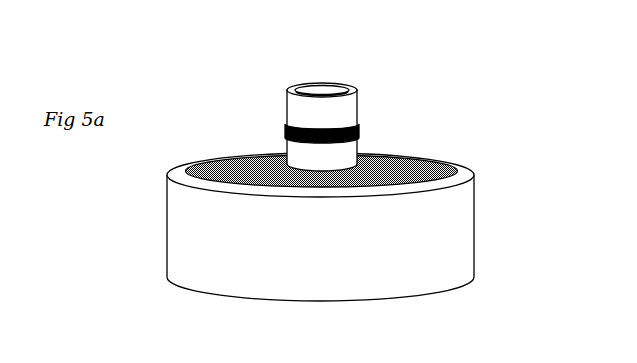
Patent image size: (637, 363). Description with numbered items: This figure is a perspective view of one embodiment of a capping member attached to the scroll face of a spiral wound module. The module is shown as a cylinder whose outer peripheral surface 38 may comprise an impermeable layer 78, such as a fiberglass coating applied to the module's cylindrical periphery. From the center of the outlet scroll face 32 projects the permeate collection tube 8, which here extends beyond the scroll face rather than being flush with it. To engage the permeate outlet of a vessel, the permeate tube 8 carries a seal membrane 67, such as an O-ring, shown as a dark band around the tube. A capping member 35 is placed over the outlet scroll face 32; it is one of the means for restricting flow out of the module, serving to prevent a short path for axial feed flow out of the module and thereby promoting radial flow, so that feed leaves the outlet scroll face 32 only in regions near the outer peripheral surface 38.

The permeate collection tube 8 is at (340, 78).
The seal membrane 67 is at (287, 124).
The outlet scroll face 32 is at (413, 155).
The capping member 35 is at (443, 158).
The outer peripheral surface 38 is at (475, 222).
The impermeable layer 78 is at (475, 253).